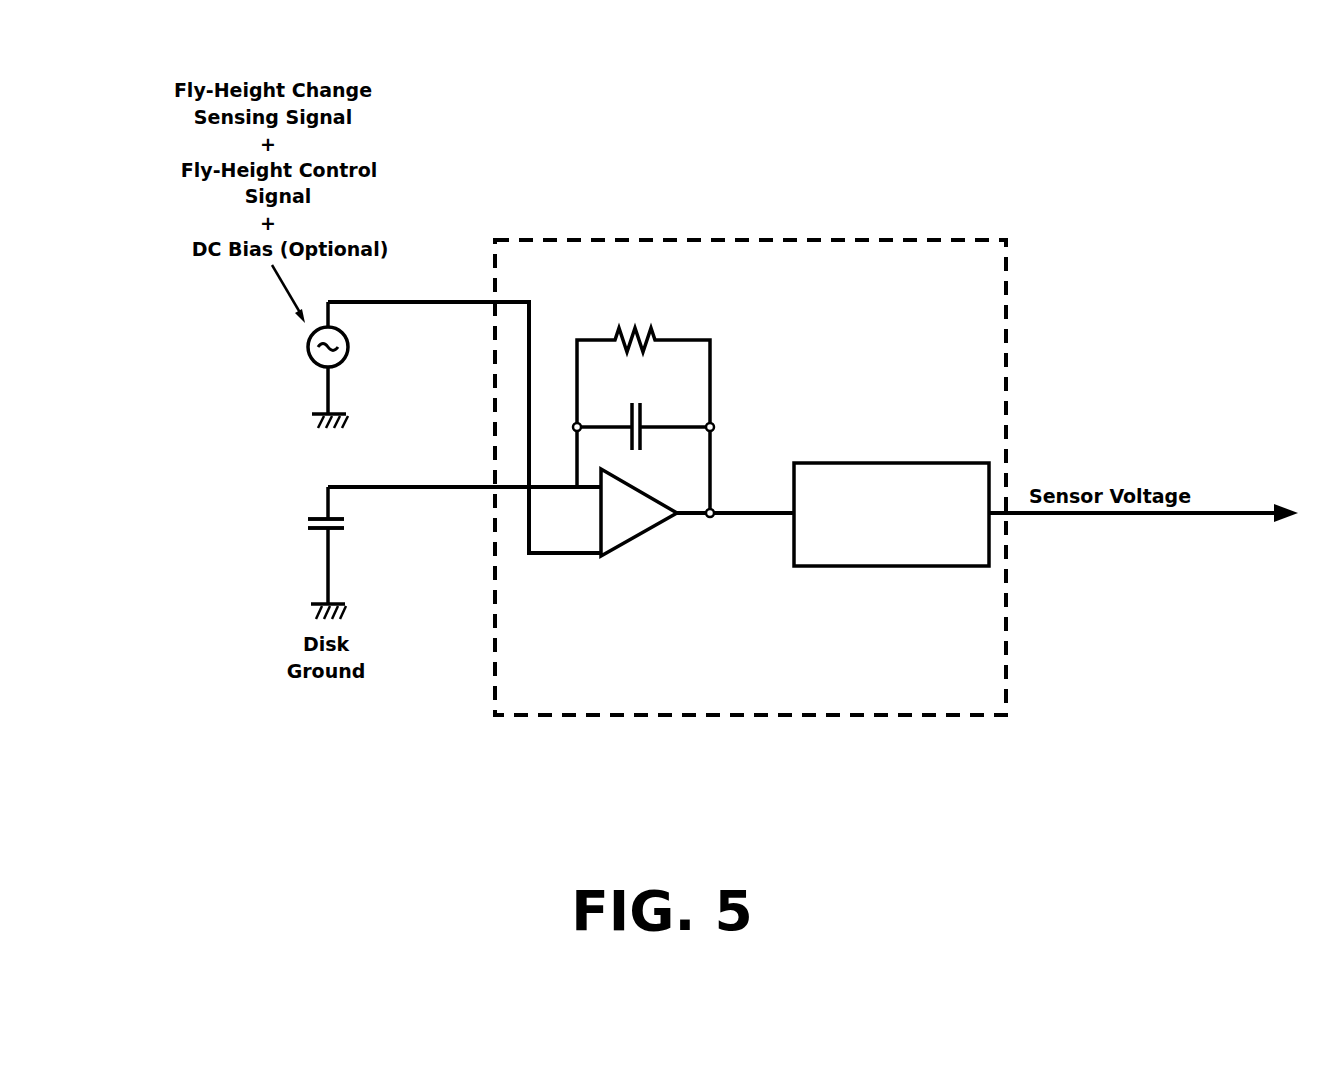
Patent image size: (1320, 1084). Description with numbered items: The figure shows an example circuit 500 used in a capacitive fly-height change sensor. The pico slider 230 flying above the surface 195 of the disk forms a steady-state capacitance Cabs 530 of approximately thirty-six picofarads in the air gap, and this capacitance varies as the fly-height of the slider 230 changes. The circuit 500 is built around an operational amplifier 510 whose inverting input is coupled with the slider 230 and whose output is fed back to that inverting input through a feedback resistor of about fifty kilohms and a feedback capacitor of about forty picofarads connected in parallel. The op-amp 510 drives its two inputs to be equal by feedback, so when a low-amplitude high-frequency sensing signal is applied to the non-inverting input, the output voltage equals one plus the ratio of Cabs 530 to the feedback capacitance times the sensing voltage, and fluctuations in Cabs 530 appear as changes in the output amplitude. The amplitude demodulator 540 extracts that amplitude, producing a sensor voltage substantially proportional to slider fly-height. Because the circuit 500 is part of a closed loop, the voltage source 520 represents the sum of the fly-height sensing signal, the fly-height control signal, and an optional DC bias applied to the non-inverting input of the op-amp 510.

The circuit 500 is at (750, 477).
The operational amplifier 510 is at (655, 527).
The voltage source 520 is at (348, 340).
The Cabs 530 is at (334, 516).
The amplitude demodulator 540 is at (891, 514).
The slider 230 is at (293, 515).
The surface 195 is at (316, 534).